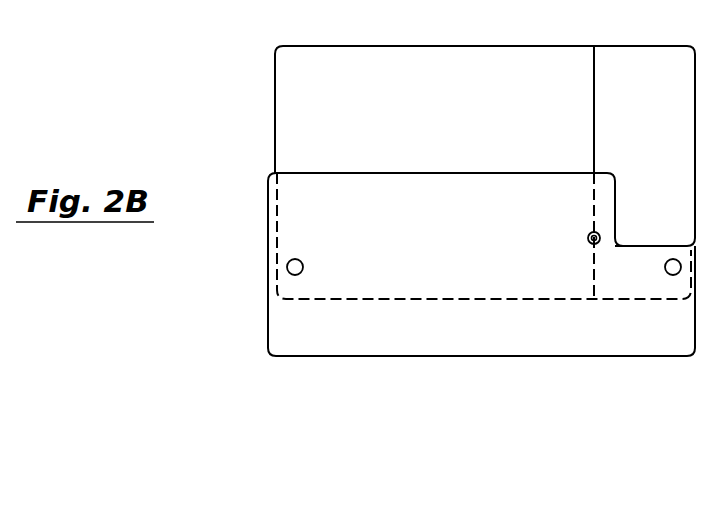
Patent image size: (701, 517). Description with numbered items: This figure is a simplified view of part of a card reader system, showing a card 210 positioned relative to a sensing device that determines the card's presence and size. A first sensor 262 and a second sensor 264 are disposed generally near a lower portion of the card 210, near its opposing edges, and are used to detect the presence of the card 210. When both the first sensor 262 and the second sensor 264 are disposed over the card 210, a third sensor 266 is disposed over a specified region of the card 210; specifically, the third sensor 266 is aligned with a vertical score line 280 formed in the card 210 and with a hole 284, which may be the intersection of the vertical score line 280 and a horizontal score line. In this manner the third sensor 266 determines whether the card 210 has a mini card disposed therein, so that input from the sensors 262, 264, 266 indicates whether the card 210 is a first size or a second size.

The card 210 is at (488, 115).
The vertical score line 280 is at (594, 104).
The first sensor 262 is at (304, 265).
The second sensor 264 is at (673, 276).
The third sensor 266 is at (588, 242).
The hole 284 is at (591, 234).